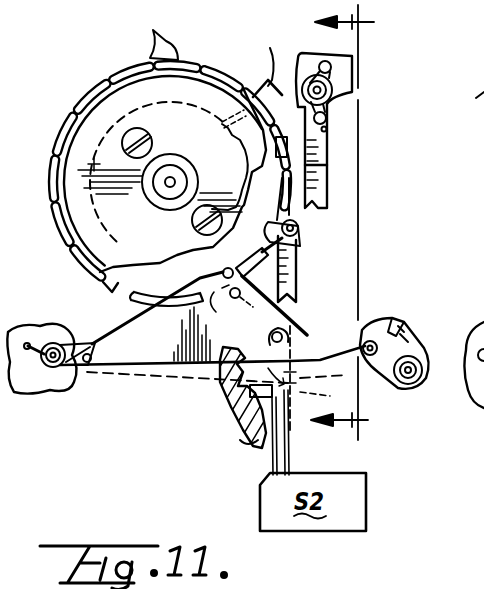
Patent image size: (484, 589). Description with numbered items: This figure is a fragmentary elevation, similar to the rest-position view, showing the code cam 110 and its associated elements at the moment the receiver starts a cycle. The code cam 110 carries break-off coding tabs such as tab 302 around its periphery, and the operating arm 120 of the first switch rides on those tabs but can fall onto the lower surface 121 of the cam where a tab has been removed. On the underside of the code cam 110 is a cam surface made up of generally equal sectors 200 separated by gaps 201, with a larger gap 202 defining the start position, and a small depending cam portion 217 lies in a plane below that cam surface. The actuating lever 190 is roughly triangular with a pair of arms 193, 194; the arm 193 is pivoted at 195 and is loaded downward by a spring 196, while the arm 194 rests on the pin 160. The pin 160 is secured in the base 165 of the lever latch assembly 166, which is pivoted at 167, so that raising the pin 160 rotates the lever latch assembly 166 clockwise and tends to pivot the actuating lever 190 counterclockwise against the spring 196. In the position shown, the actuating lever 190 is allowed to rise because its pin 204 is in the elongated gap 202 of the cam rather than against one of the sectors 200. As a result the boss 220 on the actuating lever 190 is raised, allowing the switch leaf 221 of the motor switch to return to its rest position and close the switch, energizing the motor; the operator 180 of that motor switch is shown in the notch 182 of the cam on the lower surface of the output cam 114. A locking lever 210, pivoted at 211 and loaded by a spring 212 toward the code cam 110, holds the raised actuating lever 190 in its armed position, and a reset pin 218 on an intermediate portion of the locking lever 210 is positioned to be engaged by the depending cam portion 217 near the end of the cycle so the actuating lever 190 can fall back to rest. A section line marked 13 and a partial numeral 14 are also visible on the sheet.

The code cam 110 is at (84, 100).
The pawl 302 is at (149, 31).
The surface of the code cam 121 is at (250, 95).
The operating arm of switch S1 120 is at (279, 54).
The section line 13- 13 is at (363, 224).
The partial numeral 14 is at (472, 49).
The locking lever 210 is at (328, 140).
The pivot of locking lever 211 is at (334, 90).
The spring 212 is at (332, 70).
The gaps 201 is at (322, 170).
The reset pin 218 is at (306, 226).
The depending cam portion 217 is at (297, 265).
The pin 204 is at (222, 274).
The larger gap 202 is at (258, 305).
The boss 220 is at (306, 338).
The sectors 200 is at (133, 316).
The spring 196 is at (24, 390).
The pivot of actuating lever 195 is at (58, 346).
The arm of actuating lever 193 is at (80, 370).
The actuating lever 190 is at (141, 362).
The notch 182 is at (256, 348).
The operator of switch S2 180 is at (232, 412).
The output cam 114 is at (250, 440).
The arm of actuating lever 194 is at (350, 366).
The switch leaf 221 is at (296, 396).
The pin 160 is at (370, 342).
The lever latch assembly 166 is at (404, 322).
The base of lever latch assembly 165 is at (405, 340).
The pivot of lever latch assembly 167 is at (412, 384).